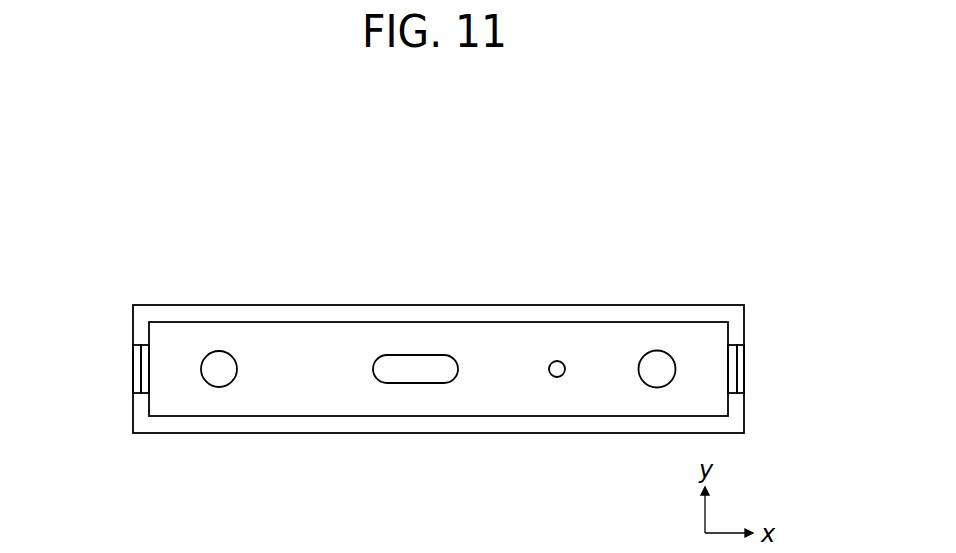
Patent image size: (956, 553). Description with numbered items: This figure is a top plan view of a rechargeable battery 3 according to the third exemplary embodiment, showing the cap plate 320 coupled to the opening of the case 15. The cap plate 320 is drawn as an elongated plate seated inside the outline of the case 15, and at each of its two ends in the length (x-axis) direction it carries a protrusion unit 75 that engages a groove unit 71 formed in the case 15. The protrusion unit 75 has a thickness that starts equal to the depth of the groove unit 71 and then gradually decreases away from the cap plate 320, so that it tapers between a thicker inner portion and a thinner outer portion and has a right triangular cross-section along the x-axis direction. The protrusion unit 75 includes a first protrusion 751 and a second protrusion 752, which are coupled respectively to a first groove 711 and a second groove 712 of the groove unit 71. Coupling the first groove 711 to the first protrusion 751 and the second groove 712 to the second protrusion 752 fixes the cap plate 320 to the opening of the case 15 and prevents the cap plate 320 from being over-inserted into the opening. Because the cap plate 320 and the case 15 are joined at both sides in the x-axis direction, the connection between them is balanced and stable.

The rechargeable battery 3 is at (439, 318).
The case 15 is at (575, 433).
The cap plate 320 is at (488, 345).
The groove unit 71 is at (439, 271).
The first groove 711 is at (138, 376).
The second groove 712 is at (740, 376).
The protrusion unit 75 is at (439, 307).
The first protrusion 751 is at (145, 350).
The second protrusion 752 is at (733, 349).